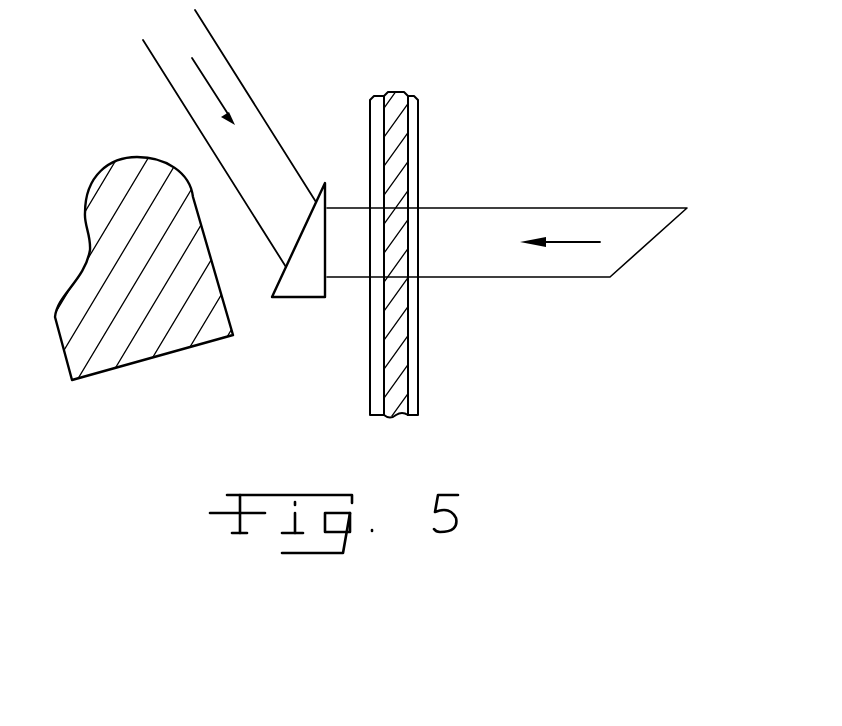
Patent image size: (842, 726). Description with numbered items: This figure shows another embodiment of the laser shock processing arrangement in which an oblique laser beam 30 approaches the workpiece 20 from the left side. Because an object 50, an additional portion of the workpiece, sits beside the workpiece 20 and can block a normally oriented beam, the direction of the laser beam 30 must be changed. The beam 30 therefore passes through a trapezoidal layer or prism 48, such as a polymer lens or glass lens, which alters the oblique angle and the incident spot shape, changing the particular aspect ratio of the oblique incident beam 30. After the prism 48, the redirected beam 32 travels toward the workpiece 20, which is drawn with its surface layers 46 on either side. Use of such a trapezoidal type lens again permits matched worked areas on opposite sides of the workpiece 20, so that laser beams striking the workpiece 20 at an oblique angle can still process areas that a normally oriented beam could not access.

The workpiece 20 is at (391, 264).
The oblique laser beam 30 is at (213, 58).
The transmitted light beam 32 is at (613, 276).
The coating layer 46 is at (372, 147).
The prism 48 is at (303, 283).
The object 50 is at (140, 363).